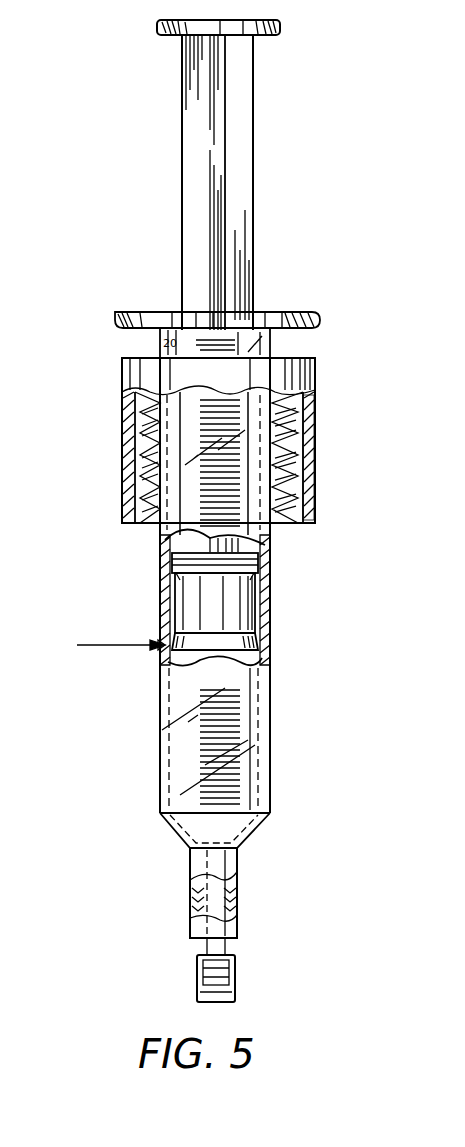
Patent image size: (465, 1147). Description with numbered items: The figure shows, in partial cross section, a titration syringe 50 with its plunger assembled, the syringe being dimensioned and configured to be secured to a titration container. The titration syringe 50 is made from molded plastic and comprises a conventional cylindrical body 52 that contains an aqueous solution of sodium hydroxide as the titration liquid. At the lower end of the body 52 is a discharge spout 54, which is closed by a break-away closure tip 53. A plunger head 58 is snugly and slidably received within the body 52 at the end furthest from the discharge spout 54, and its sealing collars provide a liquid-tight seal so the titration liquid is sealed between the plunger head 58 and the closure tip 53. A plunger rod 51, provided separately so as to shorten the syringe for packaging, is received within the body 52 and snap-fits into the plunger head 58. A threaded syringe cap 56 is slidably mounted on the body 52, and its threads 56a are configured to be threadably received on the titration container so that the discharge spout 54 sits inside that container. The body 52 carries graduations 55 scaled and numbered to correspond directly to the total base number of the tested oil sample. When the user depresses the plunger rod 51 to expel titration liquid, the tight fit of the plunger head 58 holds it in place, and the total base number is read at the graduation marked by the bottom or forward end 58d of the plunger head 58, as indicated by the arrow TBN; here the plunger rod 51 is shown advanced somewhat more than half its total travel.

The titration syringe 50 is at (150, 540).
The plunger rod 51 is at (225, 202).
The cylindrical body 52 is at (267, 546).
The break-away closure tip 53 is at (197, 966).
The discharge spout 54 is at (233, 878).
The graduations 55 is at (202, 757).
The threaded syringe cap 56 is at (122, 432).
The threads 56a is at (313, 458).
The plunger head 58 is at (208, 612).
The bottom end of plunger head 58d is at (262, 655).
The arrow indicating total base number reading TBN is at (93, 647).